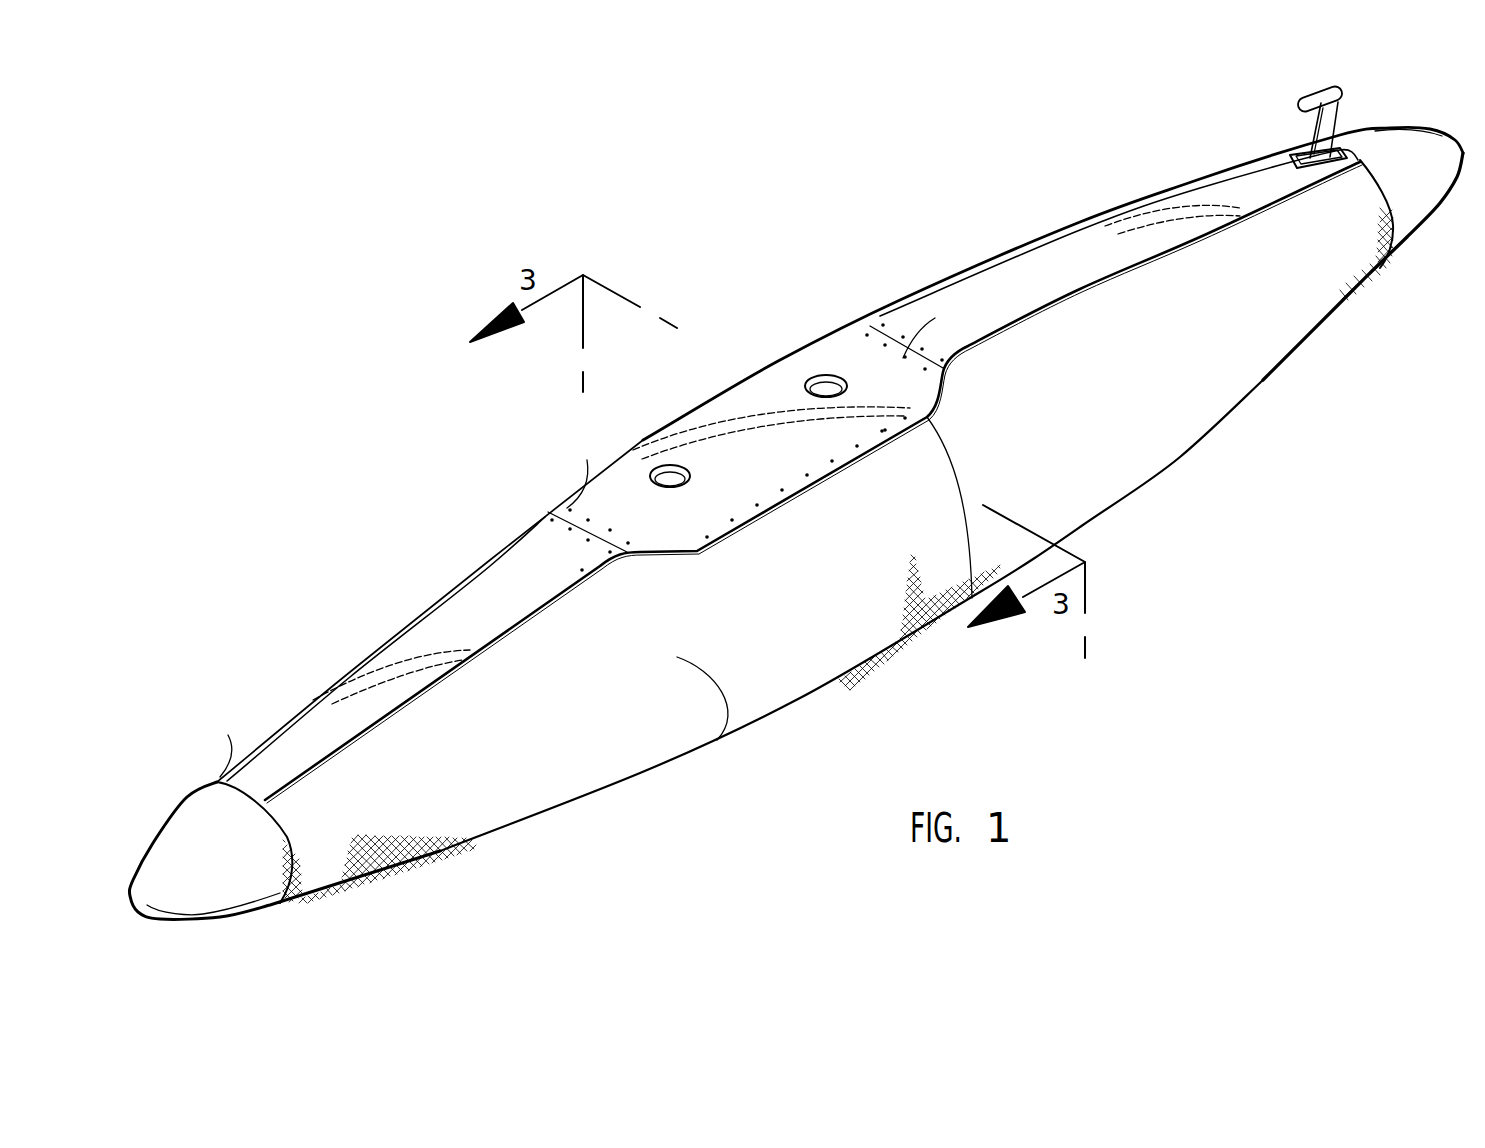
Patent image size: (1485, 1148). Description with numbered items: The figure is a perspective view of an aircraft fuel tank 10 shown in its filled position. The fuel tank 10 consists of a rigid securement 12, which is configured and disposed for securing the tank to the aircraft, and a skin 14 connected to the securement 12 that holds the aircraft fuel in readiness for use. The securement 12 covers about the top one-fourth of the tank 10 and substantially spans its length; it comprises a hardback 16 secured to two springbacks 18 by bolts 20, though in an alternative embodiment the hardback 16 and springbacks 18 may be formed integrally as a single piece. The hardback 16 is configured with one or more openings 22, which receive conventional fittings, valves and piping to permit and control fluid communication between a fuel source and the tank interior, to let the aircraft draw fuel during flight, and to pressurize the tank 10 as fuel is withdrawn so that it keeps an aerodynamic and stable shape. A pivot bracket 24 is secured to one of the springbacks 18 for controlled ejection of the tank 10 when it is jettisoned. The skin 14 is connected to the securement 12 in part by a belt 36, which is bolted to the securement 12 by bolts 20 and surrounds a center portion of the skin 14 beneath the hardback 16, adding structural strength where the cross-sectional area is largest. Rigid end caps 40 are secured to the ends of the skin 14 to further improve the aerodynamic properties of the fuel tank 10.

The fuel tank 10 is at (422, 465).
The rigid securement 12 is at (533, 545).
The skin 14 is at (695, 551).
The hardback 16 is at (910, 393).
The springbacks 18 is at (430, 618).
The bolts 20 is at (243, 783).
The openings 22 is at (690, 462).
The pivot bracket 24 is at (1318, 95).
The belt 36 is at (848, 637).
The rigid end caps 40 is at (228, 880).